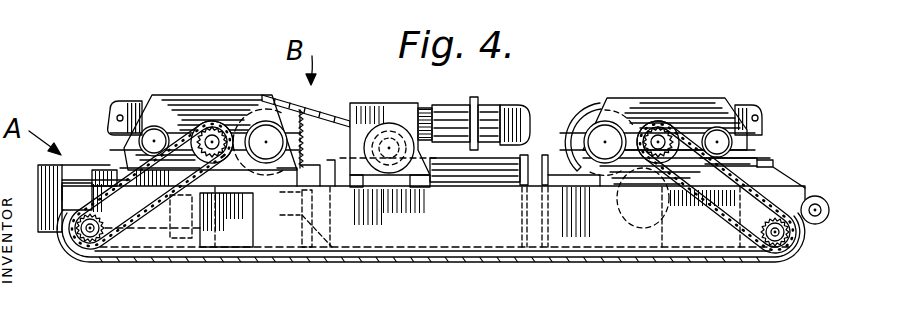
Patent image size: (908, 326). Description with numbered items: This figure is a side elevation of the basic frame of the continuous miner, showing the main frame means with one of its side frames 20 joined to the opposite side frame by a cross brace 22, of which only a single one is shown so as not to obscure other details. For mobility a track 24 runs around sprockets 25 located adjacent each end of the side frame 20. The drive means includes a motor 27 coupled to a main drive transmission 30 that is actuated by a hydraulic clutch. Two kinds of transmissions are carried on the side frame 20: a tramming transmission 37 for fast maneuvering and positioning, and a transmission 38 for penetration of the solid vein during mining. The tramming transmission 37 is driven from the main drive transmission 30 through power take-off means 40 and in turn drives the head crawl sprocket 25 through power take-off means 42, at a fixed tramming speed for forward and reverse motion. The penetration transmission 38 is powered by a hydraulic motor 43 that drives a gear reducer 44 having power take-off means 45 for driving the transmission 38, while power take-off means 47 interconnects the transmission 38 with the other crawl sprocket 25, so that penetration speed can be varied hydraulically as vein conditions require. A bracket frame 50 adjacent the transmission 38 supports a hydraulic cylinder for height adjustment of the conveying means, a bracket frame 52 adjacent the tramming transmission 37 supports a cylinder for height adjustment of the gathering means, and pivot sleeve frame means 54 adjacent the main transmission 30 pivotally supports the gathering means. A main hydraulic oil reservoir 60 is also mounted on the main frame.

The side frame 20 is at (490, 226).
The cross brace 22 is at (172, 252).
The track 24 is at (388, 265).
The sprocket 25 is at (83, 240).
The motor 27 is at (463, 175).
The main drive transmission 30 is at (766, 168).
The tramming transmission 37 is at (683, 84).
The transmission 38 is at (212, 84).
The power take-off means 40 is at (582, 121).
The power take-off means 42 is at (713, 1).
The hydraulic motor 43 is at (503, 104).
The gear reducer 44 is at (392, 103).
The power take-off means 45 is at (318, 107).
The power take-off means 47 is at (136, 1).
The bracket frame 50 is at (124, 110).
The bracket frame 52 is at (760, 128).
The pivot sleeve frame means 54 is at (830, 210).
The main hydraulic oil reservoir 60 is at (48, 168).